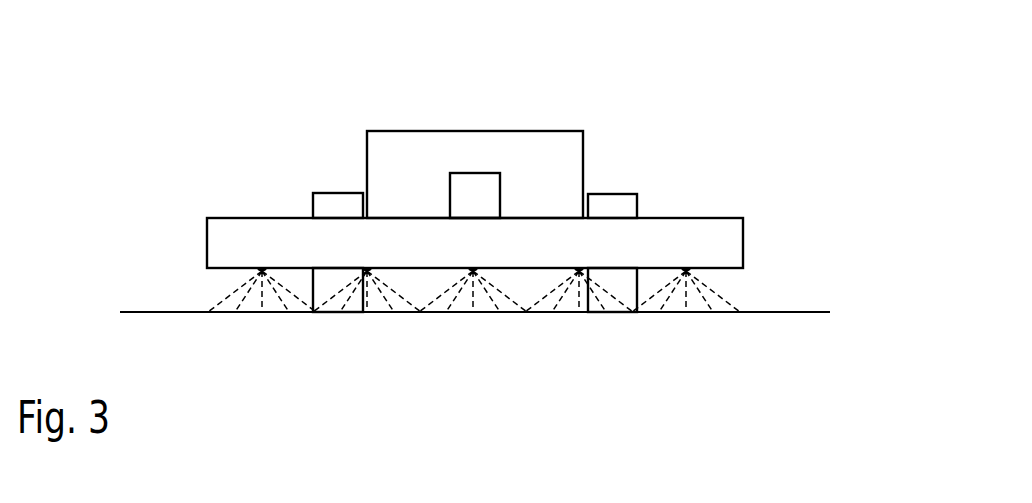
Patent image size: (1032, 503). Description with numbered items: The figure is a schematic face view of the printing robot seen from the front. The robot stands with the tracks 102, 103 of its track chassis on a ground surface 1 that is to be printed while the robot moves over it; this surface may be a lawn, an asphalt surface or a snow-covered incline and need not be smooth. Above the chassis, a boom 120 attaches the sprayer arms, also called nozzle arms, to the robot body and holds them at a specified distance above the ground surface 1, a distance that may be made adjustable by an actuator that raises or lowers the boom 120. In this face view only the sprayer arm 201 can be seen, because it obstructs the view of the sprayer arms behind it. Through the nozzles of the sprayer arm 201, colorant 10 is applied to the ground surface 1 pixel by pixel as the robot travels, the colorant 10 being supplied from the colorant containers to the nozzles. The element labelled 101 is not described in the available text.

The ground surface 1 is at (830, 312).
The colorant 10 is at (690, 272).
The main body 101 is at (477, 131).
The track 102 is at (620, 193).
The track 103 is at (333, 192).
The boom 120 is at (478, 173).
The sprayer arm 201 is at (743, 242).